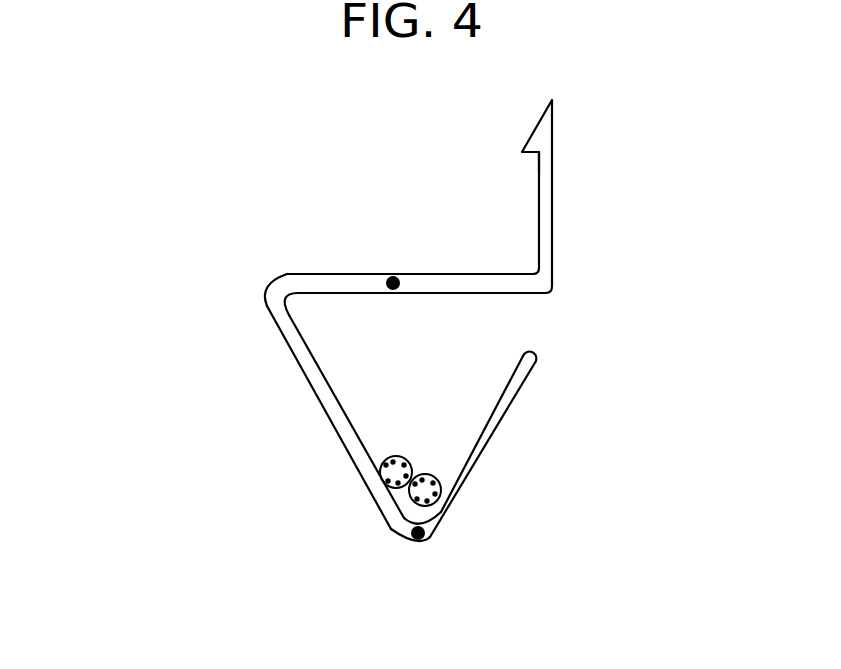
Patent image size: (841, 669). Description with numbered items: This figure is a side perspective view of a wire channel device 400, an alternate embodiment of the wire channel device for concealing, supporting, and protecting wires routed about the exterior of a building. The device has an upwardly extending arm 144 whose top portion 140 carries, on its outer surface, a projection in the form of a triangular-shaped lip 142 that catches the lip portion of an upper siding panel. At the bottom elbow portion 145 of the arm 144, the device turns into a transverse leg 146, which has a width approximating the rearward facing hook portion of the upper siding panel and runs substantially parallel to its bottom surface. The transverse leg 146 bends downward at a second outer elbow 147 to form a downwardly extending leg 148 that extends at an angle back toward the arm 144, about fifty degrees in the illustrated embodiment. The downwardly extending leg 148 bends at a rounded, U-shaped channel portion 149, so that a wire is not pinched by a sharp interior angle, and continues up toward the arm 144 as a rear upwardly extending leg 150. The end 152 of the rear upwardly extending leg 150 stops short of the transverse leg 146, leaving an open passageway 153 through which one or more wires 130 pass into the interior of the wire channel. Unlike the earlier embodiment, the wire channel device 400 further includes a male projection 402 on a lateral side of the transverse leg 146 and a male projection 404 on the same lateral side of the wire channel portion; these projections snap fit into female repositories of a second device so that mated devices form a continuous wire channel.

The wire channel device 400 is at (170, 215).
The top portion 140 is at (552, 133).
The triangular-shaped lip 142 is at (523, 151).
The upwardly extending arm 144 is at (552, 235).
The bottom elbow portion 145 is at (548, 293).
The transverse leg 146 is at (330, 273).
The second outer elbow 147 is at (270, 282).
The downwardly extending leg 148 is at (310, 396).
The channel portion 149 is at (427, 538).
The rear upwardly extending leg 150 is at (500, 428).
The free end of arm 152 is at (525, 352).
The open passageway 153 is at (528, 324).
The male projection 402 is at (393, 277).
The male projection 404 is at (412, 540).
The wires 130 is at (408, 462).